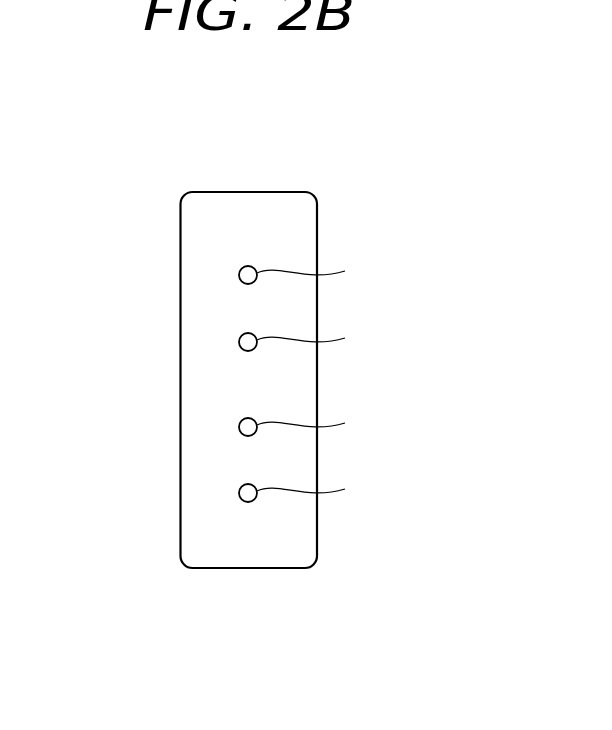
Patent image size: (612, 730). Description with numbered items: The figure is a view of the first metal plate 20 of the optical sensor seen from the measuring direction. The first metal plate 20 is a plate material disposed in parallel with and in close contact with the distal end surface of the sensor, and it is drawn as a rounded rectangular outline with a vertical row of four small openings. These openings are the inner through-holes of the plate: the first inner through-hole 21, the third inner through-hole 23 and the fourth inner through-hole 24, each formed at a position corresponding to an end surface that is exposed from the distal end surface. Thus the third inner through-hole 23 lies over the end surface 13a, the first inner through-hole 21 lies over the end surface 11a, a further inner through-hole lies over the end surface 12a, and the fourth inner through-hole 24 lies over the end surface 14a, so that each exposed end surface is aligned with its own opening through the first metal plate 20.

The first metal plate 20 is at (253, 213).
The end surface 13a is at (239, 275).
The end surface 11a is at (239, 342).
The end surface 12a is at (239, 427).
The end surface 14a is at (239, 493).
The third inner through-hole 23 is at (316, 270).
The first inner through-hole 21 is at (316, 380).
The fourth inner through-hole 24 is at (316, 490).